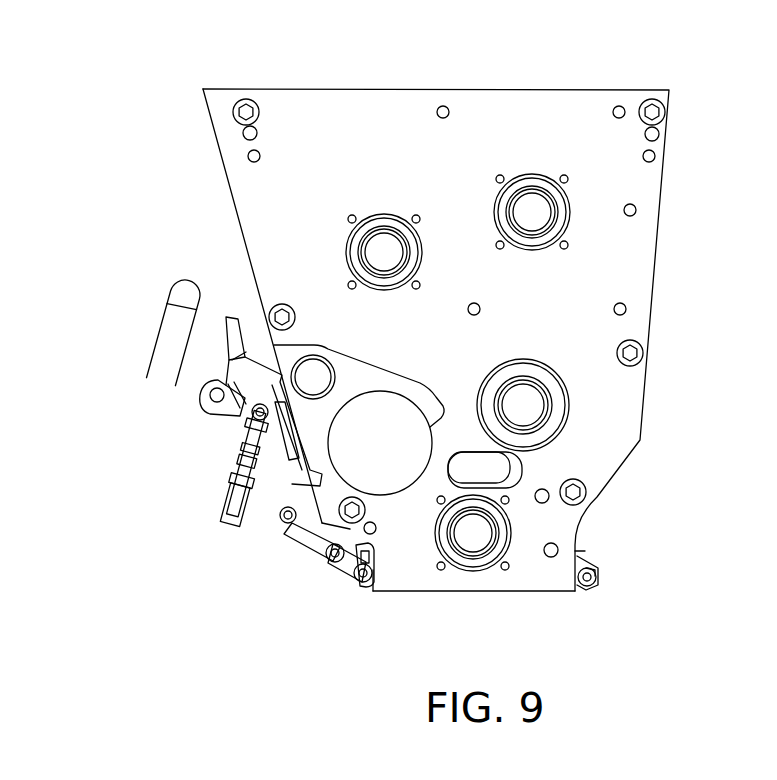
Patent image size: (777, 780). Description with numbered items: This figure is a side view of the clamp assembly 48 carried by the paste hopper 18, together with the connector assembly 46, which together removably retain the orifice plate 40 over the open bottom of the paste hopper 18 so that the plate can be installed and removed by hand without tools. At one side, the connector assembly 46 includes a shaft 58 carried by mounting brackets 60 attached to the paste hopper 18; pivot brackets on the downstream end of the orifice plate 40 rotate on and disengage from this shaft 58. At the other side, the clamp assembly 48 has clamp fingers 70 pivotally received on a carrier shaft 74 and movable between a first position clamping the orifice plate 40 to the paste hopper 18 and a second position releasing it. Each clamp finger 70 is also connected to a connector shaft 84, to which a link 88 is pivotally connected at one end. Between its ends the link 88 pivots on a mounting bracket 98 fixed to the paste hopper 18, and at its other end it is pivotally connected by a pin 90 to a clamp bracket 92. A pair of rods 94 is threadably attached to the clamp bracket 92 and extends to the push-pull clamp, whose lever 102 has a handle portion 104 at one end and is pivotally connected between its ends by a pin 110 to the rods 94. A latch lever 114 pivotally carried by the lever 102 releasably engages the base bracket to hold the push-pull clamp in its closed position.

The paste hopper 18 is at (477, 78).
The orifice plate 40 is at (522, 593).
The connector assembly 46 is at (652, 598).
The clamp assembly 48 is at (230, 355).
The shaft 58 is at (597, 575).
The mounting bracket 60 is at (583, 557).
The clamp finger 70 is at (350, 563).
The carrier shaft 74 is at (356, 583).
The connector shaft 84 is at (332, 556).
The link 88 is at (283, 530).
The pin 90 is at (279, 513).
The clamp bracket 92 is at (282, 492).
The rod 94 is at (265, 455).
The mounting bracket 98 is at (293, 483).
The lever 102 is at (200, 395).
The handle portion 104 is at (178, 288).
The pin 110 is at (245, 418).
The latch lever 114 is at (240, 322).